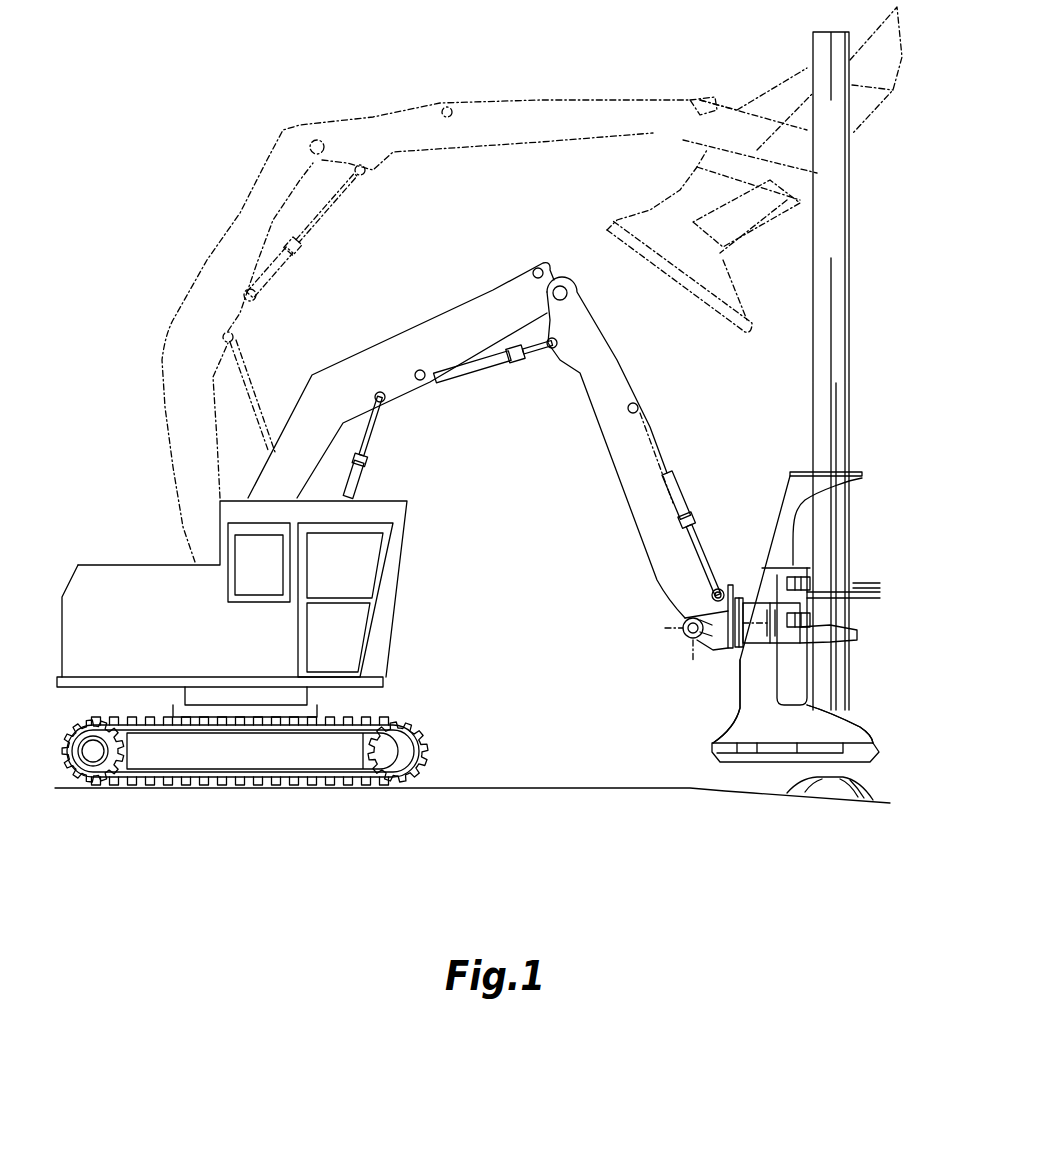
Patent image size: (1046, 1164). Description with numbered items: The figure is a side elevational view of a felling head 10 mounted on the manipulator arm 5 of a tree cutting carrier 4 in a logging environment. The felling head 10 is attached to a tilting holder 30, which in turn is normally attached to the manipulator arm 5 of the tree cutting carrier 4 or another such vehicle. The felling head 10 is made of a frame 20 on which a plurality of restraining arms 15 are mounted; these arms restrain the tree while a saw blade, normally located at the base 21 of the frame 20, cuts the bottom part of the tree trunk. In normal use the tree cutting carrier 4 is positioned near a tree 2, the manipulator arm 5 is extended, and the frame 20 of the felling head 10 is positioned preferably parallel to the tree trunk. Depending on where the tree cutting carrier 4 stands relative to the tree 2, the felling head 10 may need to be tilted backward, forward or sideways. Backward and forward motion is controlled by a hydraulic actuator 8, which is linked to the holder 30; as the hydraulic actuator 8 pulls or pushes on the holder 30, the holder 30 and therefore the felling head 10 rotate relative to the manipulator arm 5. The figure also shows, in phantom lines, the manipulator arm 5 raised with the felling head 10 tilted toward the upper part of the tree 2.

The tree 2 is at (820, 398).
The tree cutting carrier 4 is at (100, 539).
The manipulator arm 5 is at (607, 446).
The hydraulic actuator 8 is at (680, 482).
The felling head 10 is at (702, 733).
The restraining arms 15 is at (880, 583).
The frame 20 is at (778, 540).
The base 21 is at (879, 757).
The tilting holder 30 is at (710, 608).